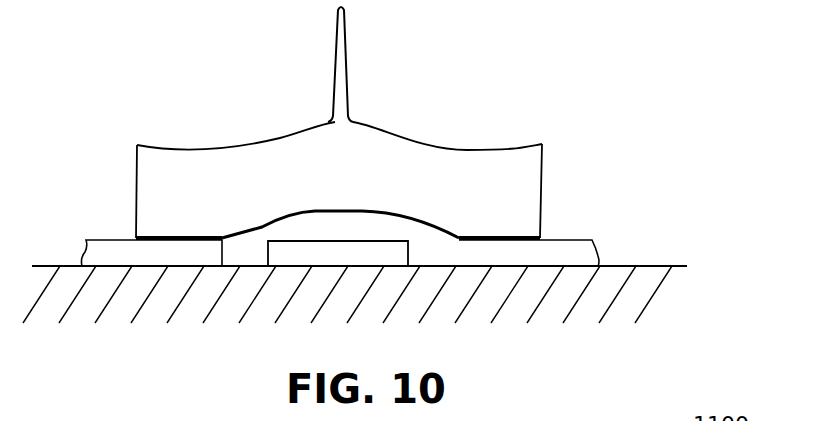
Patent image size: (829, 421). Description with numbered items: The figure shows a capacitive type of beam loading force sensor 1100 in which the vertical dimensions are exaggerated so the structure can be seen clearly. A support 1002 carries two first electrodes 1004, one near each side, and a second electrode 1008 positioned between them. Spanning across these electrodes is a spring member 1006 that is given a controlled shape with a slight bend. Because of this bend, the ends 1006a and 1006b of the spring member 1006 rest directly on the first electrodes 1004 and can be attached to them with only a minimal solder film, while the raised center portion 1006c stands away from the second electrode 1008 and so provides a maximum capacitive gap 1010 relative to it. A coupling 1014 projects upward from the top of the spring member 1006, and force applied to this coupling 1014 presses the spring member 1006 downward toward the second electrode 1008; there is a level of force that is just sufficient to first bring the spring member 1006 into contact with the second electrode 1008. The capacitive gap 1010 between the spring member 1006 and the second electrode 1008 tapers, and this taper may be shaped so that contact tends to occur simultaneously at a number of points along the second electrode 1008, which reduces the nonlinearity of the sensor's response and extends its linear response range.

The sensor device 1100 is at (543, 68).
The support 1002 is at (162, 307).
The first electrodes 1004 is at (117, 253).
The second electrode 1008 is at (323, 253).
The spring member 1006 is at (445, 170).
The end of the spring member 1006a is at (217, 238).
The end of the spring member 1006b is at (500, 238).
The center portion of the spring member 1006c is at (327, 208).
The capacitive gap 1010 is at (328, 230).
The coupling 1014 is at (343, 65).